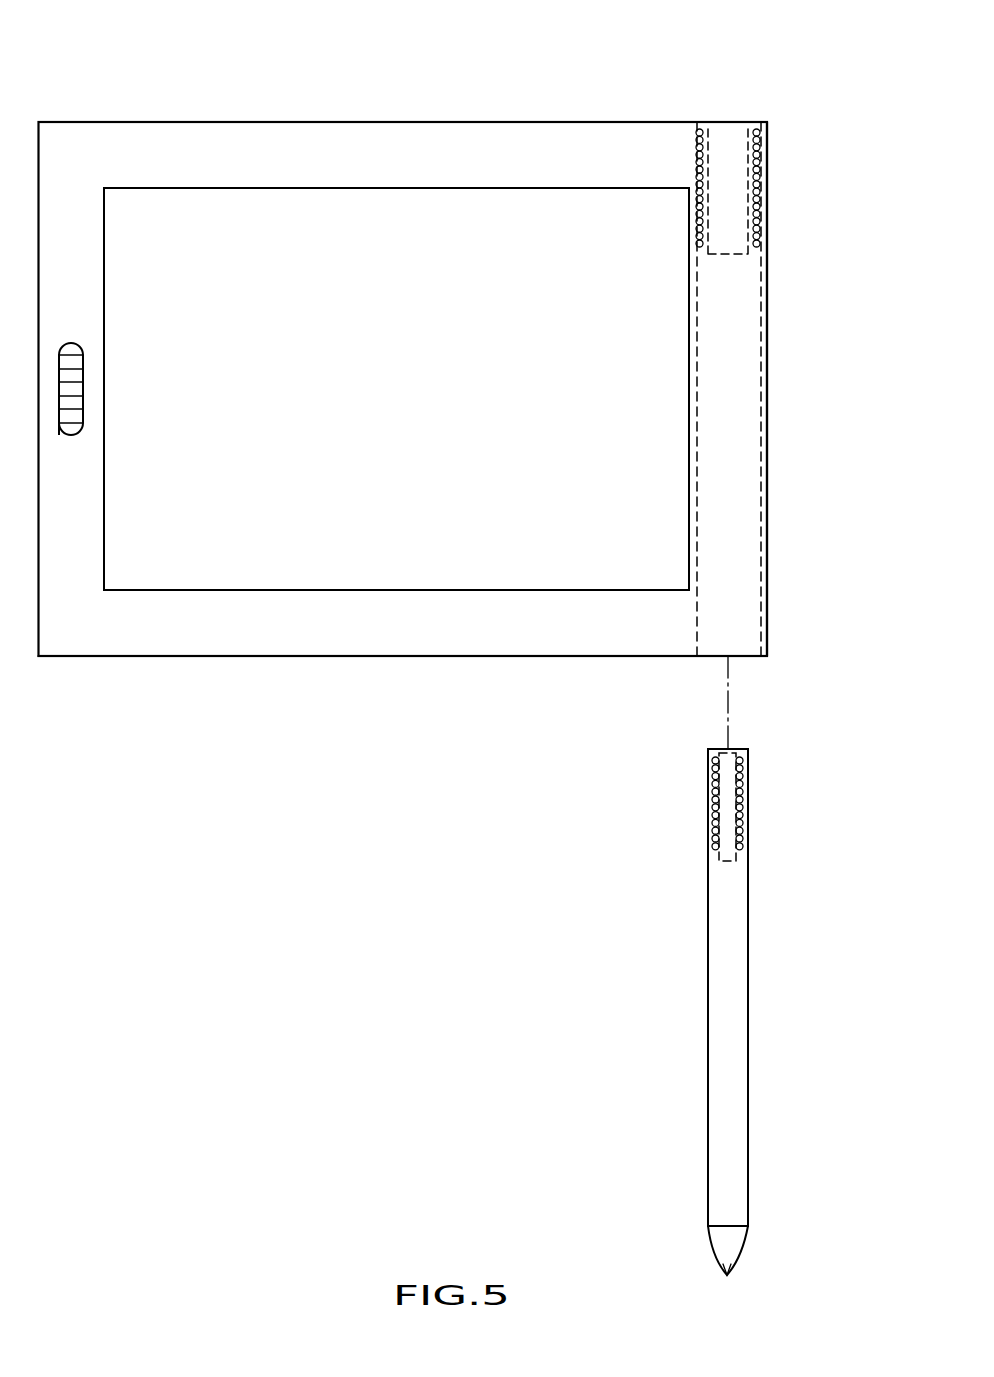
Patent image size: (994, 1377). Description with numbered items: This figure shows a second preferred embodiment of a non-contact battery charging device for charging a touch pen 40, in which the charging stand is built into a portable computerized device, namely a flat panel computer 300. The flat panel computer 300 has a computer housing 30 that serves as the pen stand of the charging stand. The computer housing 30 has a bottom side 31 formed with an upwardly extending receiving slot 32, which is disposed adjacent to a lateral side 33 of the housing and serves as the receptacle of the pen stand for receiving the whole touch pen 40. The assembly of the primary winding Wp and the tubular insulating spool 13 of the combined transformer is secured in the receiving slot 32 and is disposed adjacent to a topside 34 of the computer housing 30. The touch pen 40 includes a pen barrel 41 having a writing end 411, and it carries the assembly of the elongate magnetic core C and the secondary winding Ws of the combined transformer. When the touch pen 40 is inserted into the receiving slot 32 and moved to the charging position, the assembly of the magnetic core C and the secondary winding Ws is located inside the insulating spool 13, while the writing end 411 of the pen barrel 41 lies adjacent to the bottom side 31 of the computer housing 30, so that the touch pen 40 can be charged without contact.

The computer housing 30 is at (155, 108).
The flat panel computer 300 is at (776, 108).
The topside 34 is at (651, 122).
The bottom side 31 is at (627, 656).
The receiving slot 32 is at (735, 376).
The lateral side 33 is at (767, 569).
The insulating spool 13 is at (750, 254).
The primary winding Wp is at (760, 170).
The touch pen 40 is at (698, 979).
The pen barrel 41 is at (737, 1150).
The writing end 411 is at (733, 1245).
The magnetic core C is at (730, 857).
The secondary winding Ws is at (743, 807).